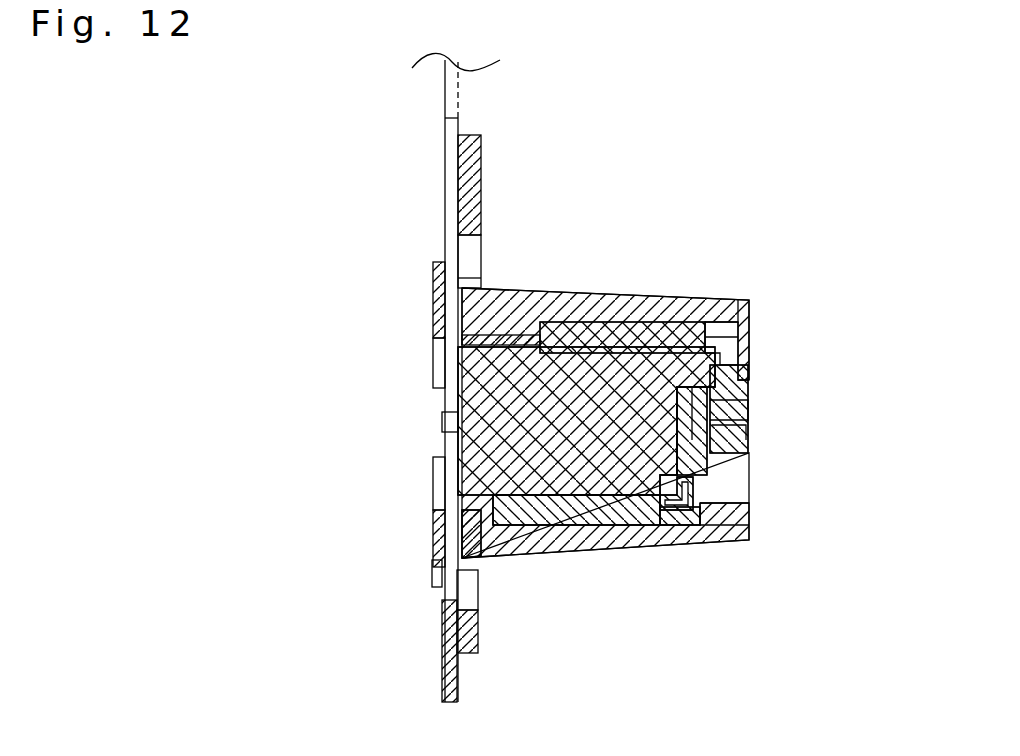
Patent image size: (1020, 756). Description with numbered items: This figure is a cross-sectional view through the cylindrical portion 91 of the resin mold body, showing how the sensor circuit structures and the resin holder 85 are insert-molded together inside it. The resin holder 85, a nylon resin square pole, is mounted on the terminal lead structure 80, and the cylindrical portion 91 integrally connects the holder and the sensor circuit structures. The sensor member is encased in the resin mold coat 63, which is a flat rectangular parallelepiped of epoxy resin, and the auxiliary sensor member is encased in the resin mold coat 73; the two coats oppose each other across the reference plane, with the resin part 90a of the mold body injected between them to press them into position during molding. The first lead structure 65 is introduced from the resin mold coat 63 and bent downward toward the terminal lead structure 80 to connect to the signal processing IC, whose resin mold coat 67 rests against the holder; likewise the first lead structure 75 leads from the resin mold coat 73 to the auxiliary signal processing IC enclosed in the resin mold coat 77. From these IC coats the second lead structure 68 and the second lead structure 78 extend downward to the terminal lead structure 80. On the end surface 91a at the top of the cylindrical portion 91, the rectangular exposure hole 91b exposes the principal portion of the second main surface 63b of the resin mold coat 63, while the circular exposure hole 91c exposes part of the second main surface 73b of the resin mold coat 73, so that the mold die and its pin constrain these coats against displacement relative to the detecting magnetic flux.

The second lead structure 68 is at (512, 300).
The resin mold coat 67 is at (620, 336).
The terminal lead structure 80 is at (437, 307).
The resin holder 85 is at (620, 450).
The resin mold coat 77 is at (552, 515).
The first lead structure 75 is at (672, 508).
The second lead structure 78 is at (493, 555).
The cylindrical portion 91 is at (717, 527).
The end surface 91a is at (750, 320).
The exposure hole 91b is at (750, 378).
The exposure hole 91c is at (750, 500).
The first lead structure 65 is at (750, 342).
The resin mold coat 63 is at (750, 392).
The second main surface 63b is at (750, 413).
The resin part 90a is at (750, 432).
The resin mold coat 73 is at (750, 447).
The second main surface 73b is at (750, 488).